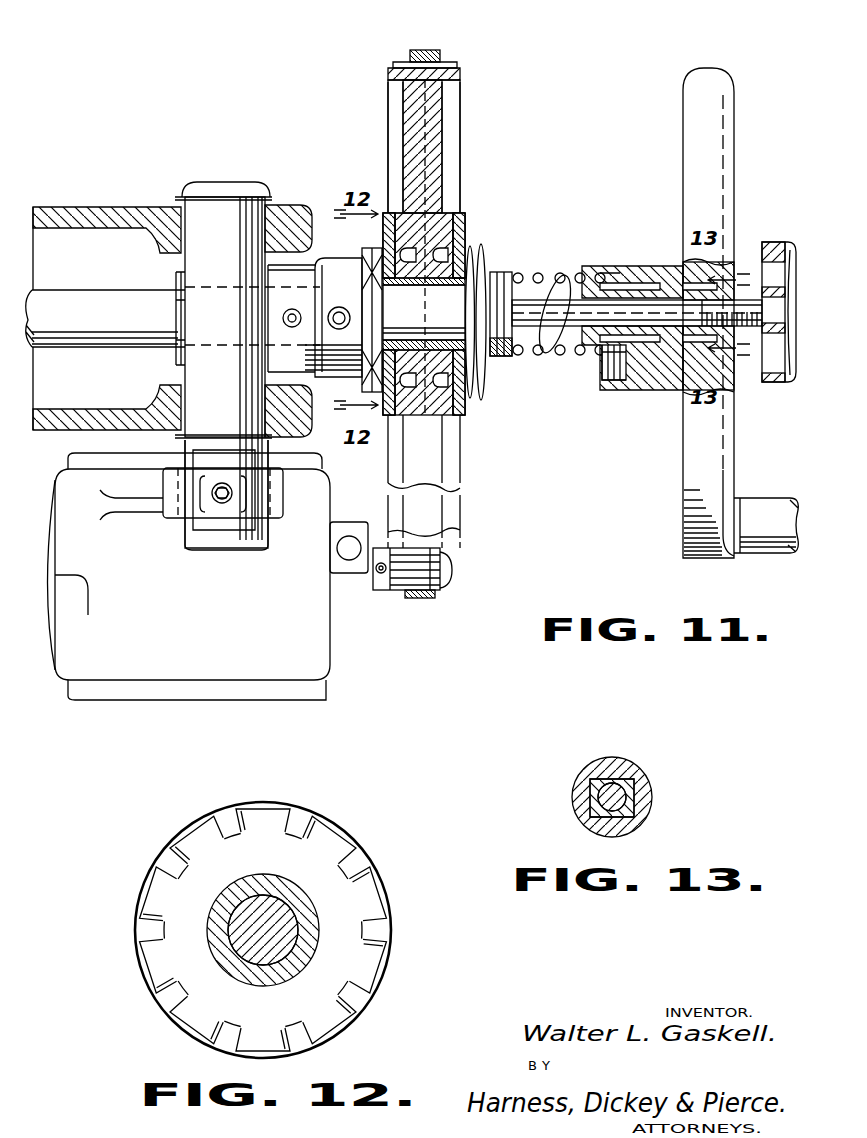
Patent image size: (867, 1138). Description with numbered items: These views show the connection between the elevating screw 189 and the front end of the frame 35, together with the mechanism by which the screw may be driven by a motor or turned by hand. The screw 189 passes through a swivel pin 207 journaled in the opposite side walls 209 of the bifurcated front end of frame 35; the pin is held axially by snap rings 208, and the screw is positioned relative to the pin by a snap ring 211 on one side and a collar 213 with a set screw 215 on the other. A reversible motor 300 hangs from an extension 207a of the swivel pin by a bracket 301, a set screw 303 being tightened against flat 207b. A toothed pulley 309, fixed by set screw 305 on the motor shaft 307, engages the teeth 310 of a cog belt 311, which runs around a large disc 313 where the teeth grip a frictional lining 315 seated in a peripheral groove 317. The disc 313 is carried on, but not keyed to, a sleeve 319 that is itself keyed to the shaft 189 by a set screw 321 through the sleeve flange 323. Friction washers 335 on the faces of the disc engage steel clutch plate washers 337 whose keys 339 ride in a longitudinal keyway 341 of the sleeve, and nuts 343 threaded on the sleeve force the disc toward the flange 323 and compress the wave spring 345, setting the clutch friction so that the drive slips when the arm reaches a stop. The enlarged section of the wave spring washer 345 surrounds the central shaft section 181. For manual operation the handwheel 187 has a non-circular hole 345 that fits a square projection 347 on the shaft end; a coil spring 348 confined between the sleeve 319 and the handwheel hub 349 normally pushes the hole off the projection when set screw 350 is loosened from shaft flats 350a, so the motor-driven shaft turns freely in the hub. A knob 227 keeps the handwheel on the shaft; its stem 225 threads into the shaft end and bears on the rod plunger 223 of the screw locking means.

In FIG. 11, the frame 35 is at (69, 198).
In FIG. 11, the elevating screw 189 is at (66, 297).
In FIG. 11, the snap ring 211 is at (176, 278).
In FIG. 11, the collar 213 is at (283, 273).
In FIG. 11, the swivel pin 207 is at (270, 197).
In FIG. 11, the snap rings 208 is at (185, 197).
In FIG. 11, the side walls 209 is at (296, 222).
In FIG. 11, the sleeve flange 323 is at (336, 248).
In FIG. 11, the set screw 321 is at (352, 302).
In FIG. 11, the set screw 215 is at (283, 318).
In FIG. 11, the wave spring 345 is at (362, 395).
In FIG. 12, the wave spring 345 is at (307, 838).
In FIG. 13, the wave spring 345 is at (628, 786).
In FIG. 11, the disc 313 is at (452, 134).
In FIG. 11, the peripheral groove 317 is at (388, 82).
In FIG. 11, the frictional lining 315 is at (408, 68).
In FIG. 11, the teeth 310 is at (450, 62).
In FIG. 11, the cog belt 311 is at (432, 50).
In FIG. 11, the friction washers 335 is at (388, 213).
In FIG. 11, the clutch plate washers 337 is at (386, 240).
In FIG. 12, the clutch plate washers 337 is at (343, 843).
In FIG. 11, the keys 339 is at (458, 274).
In FIG. 11, the keyway 341 is at (444, 285).
In FIG. 11, the nuts 343 is at (476, 392).
In FIG. 11, the sleeve 319 is at (508, 368).
In FIG. 12, the sleeve 319 is at (262, 985).
In FIG. 11, the coil spring 348 is at (536, 278).
In FIG. 11, the handwheel hub 349 is at (606, 275).
In FIG. 11, the projection 347 is at (702, 312).
In FIG. 13, the projection 347 is at (612, 781).
In FIG. 11, the rod plunger 223 is at (612, 270).
In FIG. 11, the stem 225 is at (665, 362).
In FIG. 11, the set screw 350 is at (612, 380).
In FIG. 11, the shaft flats 350a is at (618, 376).
In FIG. 11, the handwheel 187 is at (714, 104).
In FIG. 11, the knob 227 is at (786, 384).
In FIG. 11, the reversible motor 300 is at (245, 638).
In FIG. 11, the bracket 301 is at (163, 518).
In FIG. 11, the set screw 303 is at (238, 462).
In FIG. 11, the extension 207a is at (185, 540).
In FIG. 11, the flat 207b is at (240, 536).
In FIG. 11, the motor shaft 307 is at (365, 575).
In FIG. 11, the set screw 305 is at (393, 592).
In FIG. 11, the pulley 309 is at (440, 594).
In FIG. 12, the shaft 181 is at (262, 905).